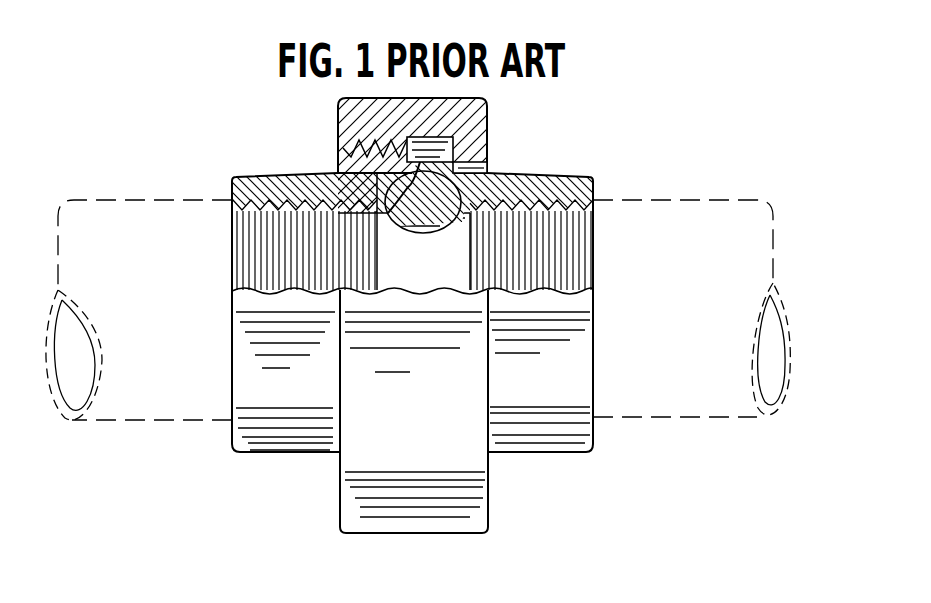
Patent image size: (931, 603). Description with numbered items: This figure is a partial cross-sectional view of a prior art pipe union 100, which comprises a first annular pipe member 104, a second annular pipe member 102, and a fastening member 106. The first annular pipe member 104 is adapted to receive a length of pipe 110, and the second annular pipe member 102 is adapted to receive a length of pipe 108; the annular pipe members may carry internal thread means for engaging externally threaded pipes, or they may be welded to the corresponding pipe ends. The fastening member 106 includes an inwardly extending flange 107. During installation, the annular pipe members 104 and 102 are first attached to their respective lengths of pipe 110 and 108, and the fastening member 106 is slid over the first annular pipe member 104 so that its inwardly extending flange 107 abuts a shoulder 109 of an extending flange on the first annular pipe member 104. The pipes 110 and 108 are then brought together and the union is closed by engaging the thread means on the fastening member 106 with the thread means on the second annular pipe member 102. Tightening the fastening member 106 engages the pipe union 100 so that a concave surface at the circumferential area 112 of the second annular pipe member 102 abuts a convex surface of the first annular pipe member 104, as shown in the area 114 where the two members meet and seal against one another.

The pipe union 100 is at (284, 104).
The second annular pipe member 102 is at (253, 385).
The first annular pipe member 104 is at (595, 176).
The fastening member 106 is at (487, 105).
The inwardly extending flange 107 is at (478, 144).
The length of pipe 108 is at (137, 198).
The shoulder 109 is at (413, 148).
The length of pipe 110 is at (735, 210).
The circumferential area 112 is at (365, 170).
The area 114 is at (500, 164).